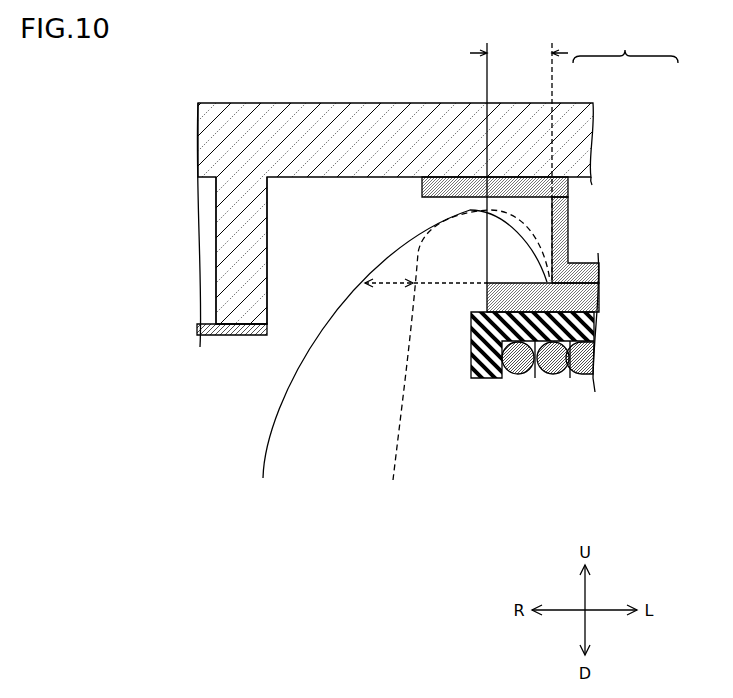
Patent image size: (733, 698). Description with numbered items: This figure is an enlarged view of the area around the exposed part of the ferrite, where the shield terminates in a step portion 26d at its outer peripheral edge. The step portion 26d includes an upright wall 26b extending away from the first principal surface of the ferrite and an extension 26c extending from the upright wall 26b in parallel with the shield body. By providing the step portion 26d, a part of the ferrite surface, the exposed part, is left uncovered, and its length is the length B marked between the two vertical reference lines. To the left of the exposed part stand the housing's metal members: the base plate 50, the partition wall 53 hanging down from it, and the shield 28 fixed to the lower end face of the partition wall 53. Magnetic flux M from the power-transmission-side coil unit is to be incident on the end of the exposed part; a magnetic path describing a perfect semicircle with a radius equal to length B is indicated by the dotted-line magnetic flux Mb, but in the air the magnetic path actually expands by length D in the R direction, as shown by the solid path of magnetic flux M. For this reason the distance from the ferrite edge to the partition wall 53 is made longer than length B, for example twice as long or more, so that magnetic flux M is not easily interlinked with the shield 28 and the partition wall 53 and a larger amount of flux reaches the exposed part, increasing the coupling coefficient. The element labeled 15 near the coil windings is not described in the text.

The base plate 50 is at (318, 135).
The partition wall 53 is at (240, 212).
The shield 28 is at (222, 336).
The extension 26c is at (528, 175).
The upright wall 26b is at (570, 217).
The step portion 26d is at (625, 44).
The coil spring 15 is at (550, 373).
The length of the exposed part B is at (519, 153).
The length of magnetic path expansion D is at (426, 297).
The magnetic flux M is at (392, 372).
The magnetic flux Mb is at (467, 359).